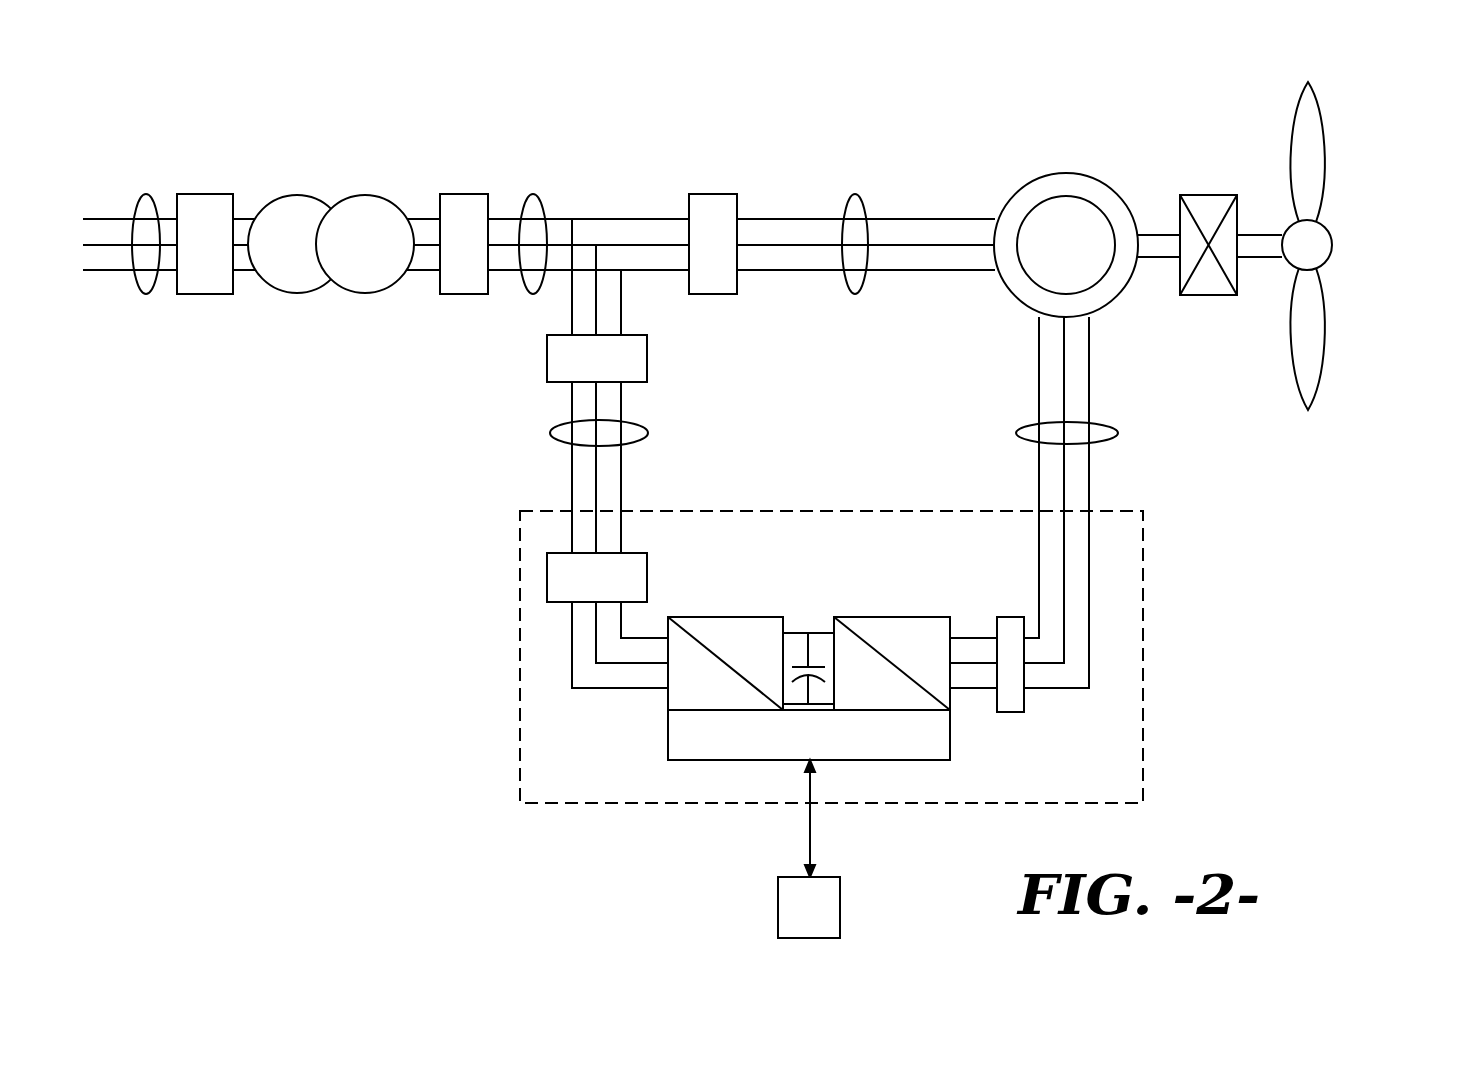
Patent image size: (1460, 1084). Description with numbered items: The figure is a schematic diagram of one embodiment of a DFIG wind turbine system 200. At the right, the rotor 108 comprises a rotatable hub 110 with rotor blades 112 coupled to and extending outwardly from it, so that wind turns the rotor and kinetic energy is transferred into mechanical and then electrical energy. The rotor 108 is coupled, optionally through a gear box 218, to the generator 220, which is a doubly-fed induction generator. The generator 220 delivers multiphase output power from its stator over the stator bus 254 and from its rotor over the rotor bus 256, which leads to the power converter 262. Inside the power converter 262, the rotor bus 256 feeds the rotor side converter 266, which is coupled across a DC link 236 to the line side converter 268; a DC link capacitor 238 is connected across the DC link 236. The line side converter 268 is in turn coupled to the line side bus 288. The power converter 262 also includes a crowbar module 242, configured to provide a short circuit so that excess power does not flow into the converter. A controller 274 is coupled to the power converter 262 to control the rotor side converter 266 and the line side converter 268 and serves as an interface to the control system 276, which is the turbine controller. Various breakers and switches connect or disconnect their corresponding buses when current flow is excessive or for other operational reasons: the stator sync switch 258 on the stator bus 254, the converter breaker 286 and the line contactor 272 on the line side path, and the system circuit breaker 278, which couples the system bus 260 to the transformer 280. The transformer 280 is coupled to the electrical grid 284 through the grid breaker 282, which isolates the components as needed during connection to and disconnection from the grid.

The rotor 108 is at (1370, 130).
The rotatable hub 110 is at (1335, 240).
The rotor blade 112 is at (1323, 165).
The wind turbine system 200 is at (365, 650).
The gear box 218 is at (1209, 195).
The generator 220 is at (1063, 173).
The DC link 236 is at (817, 630).
The DC link capacitor 238 is at (794, 665).
The crowbar module 242 is at (1028, 697).
The stator bus 254 is at (854, 194).
The rotor bus 256 is at (1120, 433).
The stator sync switch 258 is at (712, 194).
The system bus 260 is at (533, 194).
The power converter 262 is at (1146, 620).
The rotor side converter 266 is at (952, 698).
The line side converter 268 is at (655, 698).
The line contactor 272 is at (547, 580).
The controller 274 is at (715, 760).
The control system 276 is at (840, 902).
The system circuit breaker 278 is at (462, 194).
The transformer 280 is at (364, 195).
The grid breaker 282 is at (204, 194).
The electrical grid 284 is at (146, 194).
The converter breaker 286 is at (547, 365).
The line side bus 288 is at (553, 443).